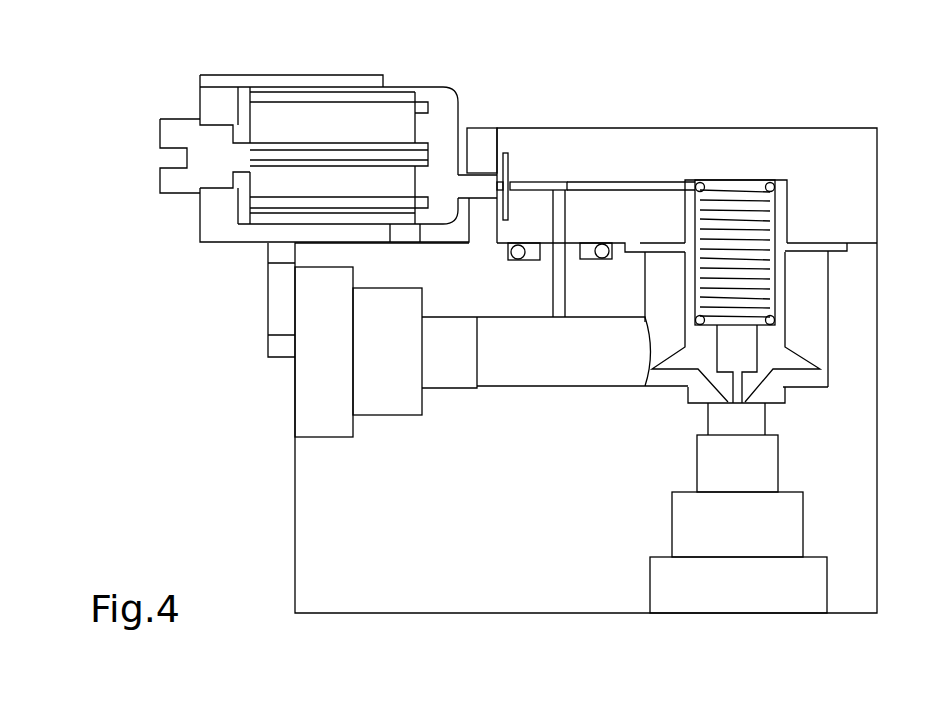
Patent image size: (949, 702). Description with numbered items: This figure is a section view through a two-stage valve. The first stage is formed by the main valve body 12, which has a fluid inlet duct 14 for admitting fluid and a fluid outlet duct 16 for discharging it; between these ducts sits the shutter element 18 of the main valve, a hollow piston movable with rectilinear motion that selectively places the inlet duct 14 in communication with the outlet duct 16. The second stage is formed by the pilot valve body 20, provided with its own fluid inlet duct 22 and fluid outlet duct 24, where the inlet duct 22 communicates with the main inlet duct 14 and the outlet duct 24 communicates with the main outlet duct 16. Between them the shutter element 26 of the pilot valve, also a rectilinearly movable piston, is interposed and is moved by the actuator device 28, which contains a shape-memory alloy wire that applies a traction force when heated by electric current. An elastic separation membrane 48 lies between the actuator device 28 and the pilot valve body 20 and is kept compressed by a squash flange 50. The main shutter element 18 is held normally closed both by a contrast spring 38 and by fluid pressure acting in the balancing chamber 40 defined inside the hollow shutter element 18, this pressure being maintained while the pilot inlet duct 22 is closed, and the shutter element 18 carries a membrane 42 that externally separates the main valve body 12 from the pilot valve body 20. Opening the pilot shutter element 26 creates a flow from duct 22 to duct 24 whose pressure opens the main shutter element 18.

The main valve body 12 is at (862, 541).
The fluid inlet duct of the main valve 14 is at (760, 593).
The fluid outlet duct of the main valve 16 is at (315, 395).
The shutter element of the main valve 18 is at (795, 368).
The pilot valve body 20 is at (860, 184).
The fluid inlet duct of the pilot valve 22 is at (636, 186).
The fluid outlet duct of the pilot valve 24 is at (563, 218).
The shutter element of the pilot valve 26 is at (540, 184).
The actuator device 28 is at (365, 117).
The contrast spring 38 is at (778, 226).
The balancing chamber 40 is at (742, 349).
The membrane 42 is at (834, 254).
The elastic separation membrane 48 is at (508, 178).
The squash flange 50 is at (480, 143).